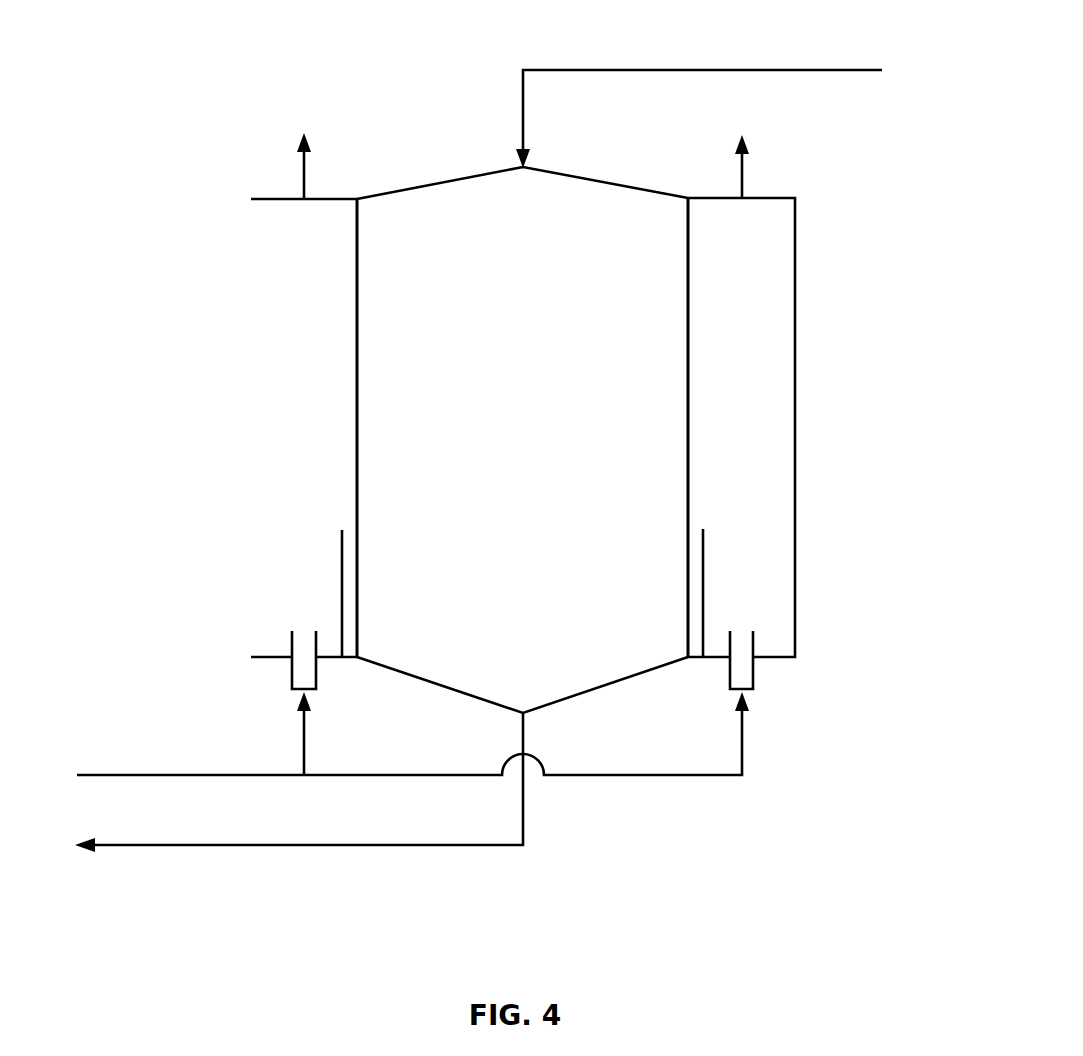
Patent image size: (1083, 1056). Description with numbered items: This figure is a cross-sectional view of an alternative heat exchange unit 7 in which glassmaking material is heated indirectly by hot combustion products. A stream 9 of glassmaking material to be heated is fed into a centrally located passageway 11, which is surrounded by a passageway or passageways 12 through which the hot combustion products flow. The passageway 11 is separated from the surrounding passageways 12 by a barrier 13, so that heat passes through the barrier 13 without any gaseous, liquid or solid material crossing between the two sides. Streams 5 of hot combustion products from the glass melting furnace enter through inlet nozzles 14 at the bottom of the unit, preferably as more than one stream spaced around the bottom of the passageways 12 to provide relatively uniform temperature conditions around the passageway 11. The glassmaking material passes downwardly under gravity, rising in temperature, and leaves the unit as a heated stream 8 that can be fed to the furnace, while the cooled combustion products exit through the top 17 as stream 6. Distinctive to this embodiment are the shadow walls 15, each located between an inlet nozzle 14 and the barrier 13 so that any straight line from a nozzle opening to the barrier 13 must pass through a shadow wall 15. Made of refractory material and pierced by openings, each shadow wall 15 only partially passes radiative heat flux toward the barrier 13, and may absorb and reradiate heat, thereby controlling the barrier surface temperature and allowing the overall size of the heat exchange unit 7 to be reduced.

The stream of hot combustion products 5 is at (219, 775).
The stream of cooled combustion products 6 is at (304, 175).
The heat exchange unit 7 is at (215, 339).
The stream of heated glassmaking material 8 is at (368, 845).
The stream of glassmaking material to be heated 9 is at (778, 70).
The passageway 11 is at (517, 399).
The passageway 12 is at (293, 399).
The barrier 13 is at (357, 257).
The inlet nozzle 14 is at (292, 673).
The shadow wall 15 is at (342, 557).
The top 17 is at (463, 178).